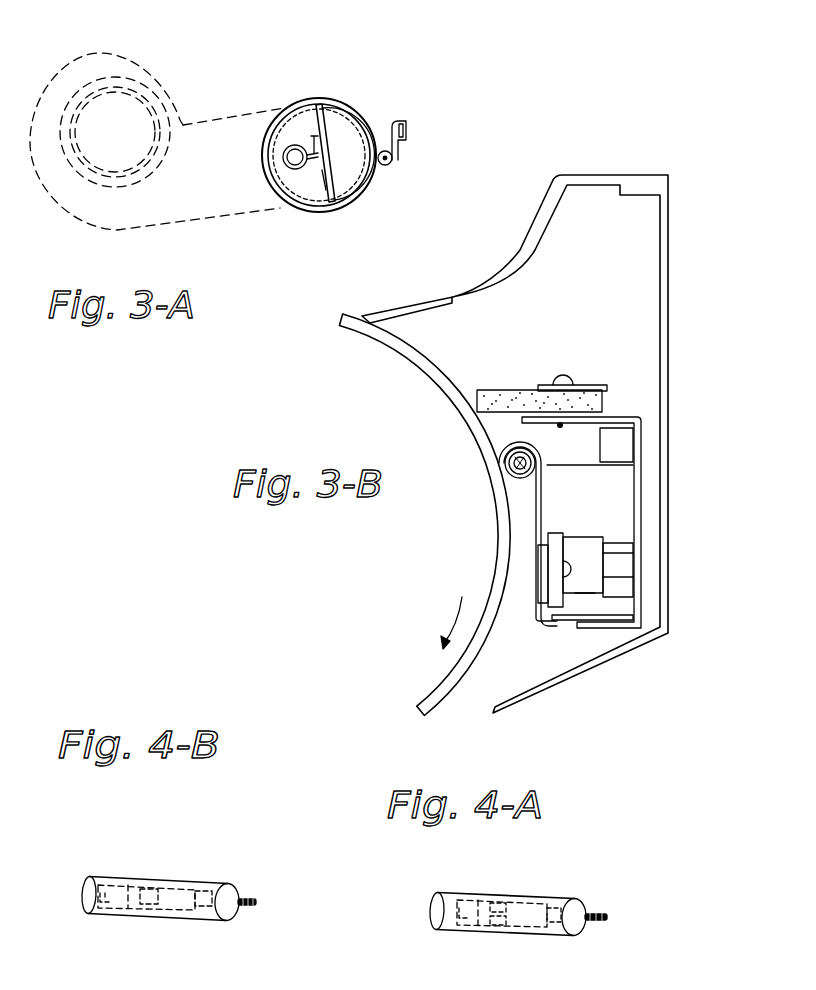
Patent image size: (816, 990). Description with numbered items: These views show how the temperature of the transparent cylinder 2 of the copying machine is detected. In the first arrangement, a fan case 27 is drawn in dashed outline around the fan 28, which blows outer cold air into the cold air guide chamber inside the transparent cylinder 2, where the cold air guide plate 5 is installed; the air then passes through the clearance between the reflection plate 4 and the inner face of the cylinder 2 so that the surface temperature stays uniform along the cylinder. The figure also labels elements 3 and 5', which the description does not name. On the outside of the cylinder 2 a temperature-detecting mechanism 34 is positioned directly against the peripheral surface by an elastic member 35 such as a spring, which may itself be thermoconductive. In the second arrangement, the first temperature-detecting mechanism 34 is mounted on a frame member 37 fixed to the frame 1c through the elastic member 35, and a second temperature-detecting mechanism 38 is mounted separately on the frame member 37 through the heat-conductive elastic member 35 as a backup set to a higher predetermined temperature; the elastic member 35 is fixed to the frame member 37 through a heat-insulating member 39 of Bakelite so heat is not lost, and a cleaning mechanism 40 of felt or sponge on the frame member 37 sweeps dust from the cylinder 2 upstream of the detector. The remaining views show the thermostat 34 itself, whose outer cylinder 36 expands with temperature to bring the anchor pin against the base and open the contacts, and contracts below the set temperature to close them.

In FIG. 3-B, the frame 1c is at (583, 290).
In FIG. 3-A, the transparent cylinder 2 is at (353, 207).
In FIG. 3-B, the transparent cylinder 2 is at (435, 695).
In FIG. 3-A, the lever knob 3 is at (293, 163).
In FIG. 3-A, the reflection plate 4 is at (325, 187).
In FIG. 3-A, the cold air guide plate 5 is at (352, 139).
In FIG. 3-A, the flap bar 5' is at (337, 131).
In FIG. 3-A, the fan case 27 is at (227, 120).
In FIG. 3-A, the fan 28 is at (118, 90).
In FIG. 3-A, the temperature-detecting mechanism 34 is at (390, 166).
In FIG. 3-B, the temperature-detecting mechanism 34 is at (510, 475).
In FIG. 4-B, the temperature-detecting mechanism 34 is at (207, 879).
In FIG. 4-A, the temperature-detecting mechanism 34 is at (545, 895).
In FIG. 3-A, the elastic member 35 is at (398, 147).
In FIG. 3-B, the elastic member 35 is at (507, 452).
In FIG. 4-B, the outer cylinder 36 is at (122, 917).
In FIG. 4-A, the outer cylinder 36 is at (465, 933).
In FIG. 3-B, the frame member 37 is at (655, 515).
In FIG. 3-B, the second temperature-detecting mechanism 38 is at (593, 590).
In FIG. 3-B, the heat-insulating member 39 is at (632, 568).
In FIG. 3-B, the cleaning mechanism 40 is at (502, 392).